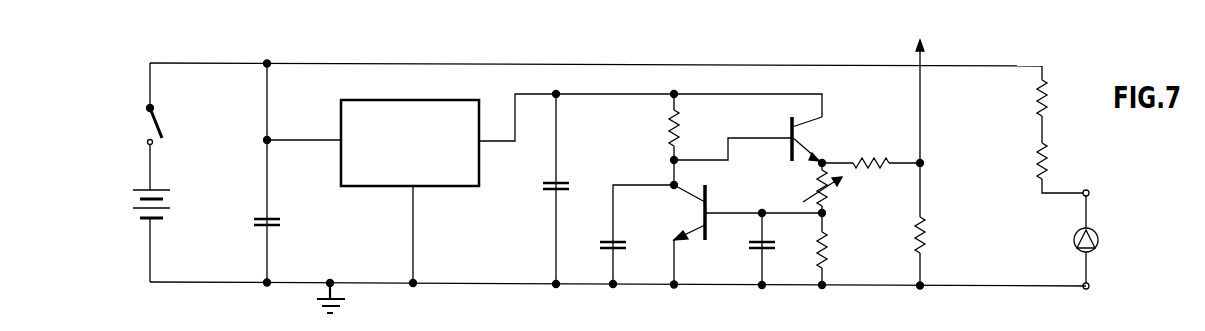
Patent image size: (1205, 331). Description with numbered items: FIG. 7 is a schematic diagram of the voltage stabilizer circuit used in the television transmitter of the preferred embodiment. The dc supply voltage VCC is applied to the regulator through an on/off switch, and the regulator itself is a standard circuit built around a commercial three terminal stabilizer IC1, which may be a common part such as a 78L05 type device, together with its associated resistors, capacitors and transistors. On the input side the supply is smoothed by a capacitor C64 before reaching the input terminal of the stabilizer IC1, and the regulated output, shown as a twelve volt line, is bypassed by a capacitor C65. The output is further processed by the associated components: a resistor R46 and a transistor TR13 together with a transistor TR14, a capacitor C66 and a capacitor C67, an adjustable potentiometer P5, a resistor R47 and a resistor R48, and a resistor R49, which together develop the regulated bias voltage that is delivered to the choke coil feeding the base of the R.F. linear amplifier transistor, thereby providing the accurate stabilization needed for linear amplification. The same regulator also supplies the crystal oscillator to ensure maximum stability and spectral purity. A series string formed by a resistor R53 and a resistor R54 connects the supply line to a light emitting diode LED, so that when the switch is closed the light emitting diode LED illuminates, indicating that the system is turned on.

The dc voltage +Vcc VCC is at (138, 214).
The capacitor C64 is at (284, 231).
The three terminal voltage regulator IC1 is at (345, 101).
The capacitor C65 is at (568, 176).
The resistor R46 is at (656, 139).
The transistor TR13 is at (756, 142).
The transistor TR14 is at (740, 235).
The capacitor C66 is at (626, 236).
The capacitor C67 is at (747, 249).
The potentiometer P5 is at (814, 190).
The resistor R47 is at (838, 251).
The resistor R48 is at (871, 156).
The resistor R49 is at (950, 164).
The resistor R53 is at (1025, 104).
The resistor R54 is at (1043, 168).
The light emitting diode LED is at (1105, 239).